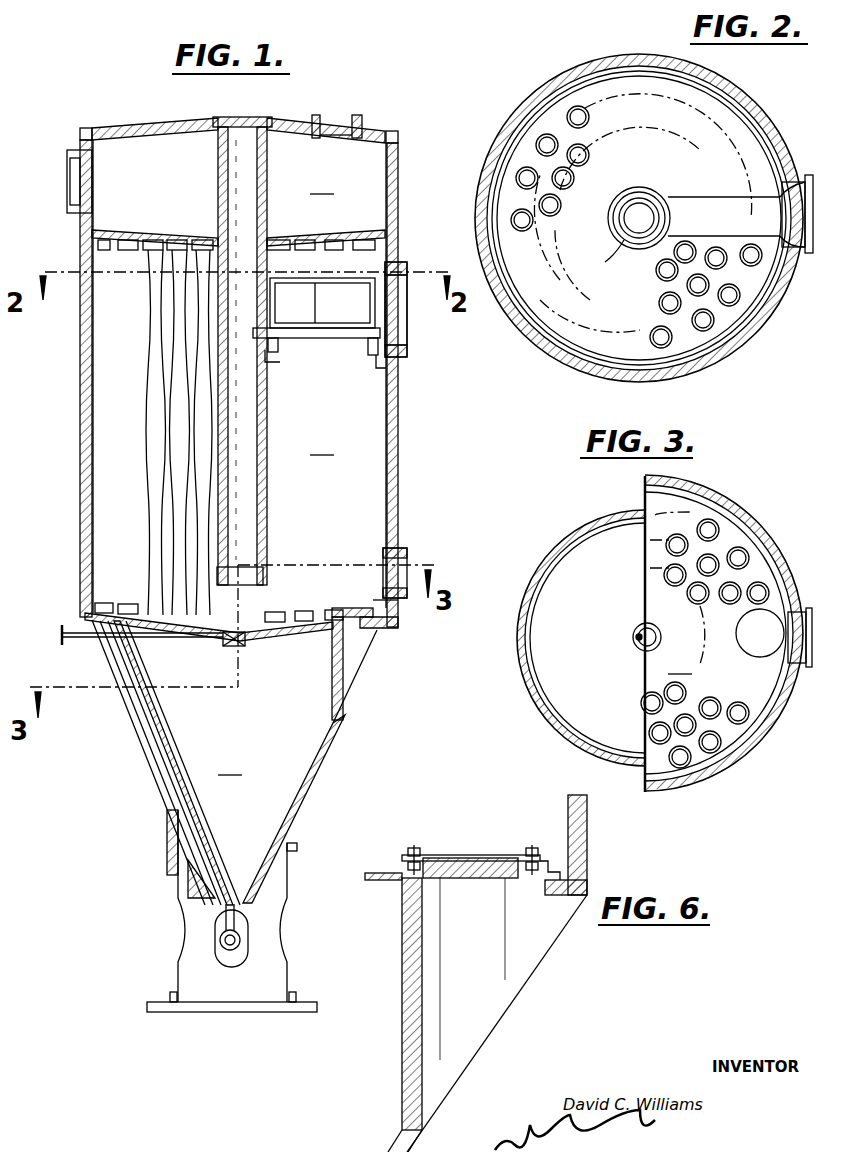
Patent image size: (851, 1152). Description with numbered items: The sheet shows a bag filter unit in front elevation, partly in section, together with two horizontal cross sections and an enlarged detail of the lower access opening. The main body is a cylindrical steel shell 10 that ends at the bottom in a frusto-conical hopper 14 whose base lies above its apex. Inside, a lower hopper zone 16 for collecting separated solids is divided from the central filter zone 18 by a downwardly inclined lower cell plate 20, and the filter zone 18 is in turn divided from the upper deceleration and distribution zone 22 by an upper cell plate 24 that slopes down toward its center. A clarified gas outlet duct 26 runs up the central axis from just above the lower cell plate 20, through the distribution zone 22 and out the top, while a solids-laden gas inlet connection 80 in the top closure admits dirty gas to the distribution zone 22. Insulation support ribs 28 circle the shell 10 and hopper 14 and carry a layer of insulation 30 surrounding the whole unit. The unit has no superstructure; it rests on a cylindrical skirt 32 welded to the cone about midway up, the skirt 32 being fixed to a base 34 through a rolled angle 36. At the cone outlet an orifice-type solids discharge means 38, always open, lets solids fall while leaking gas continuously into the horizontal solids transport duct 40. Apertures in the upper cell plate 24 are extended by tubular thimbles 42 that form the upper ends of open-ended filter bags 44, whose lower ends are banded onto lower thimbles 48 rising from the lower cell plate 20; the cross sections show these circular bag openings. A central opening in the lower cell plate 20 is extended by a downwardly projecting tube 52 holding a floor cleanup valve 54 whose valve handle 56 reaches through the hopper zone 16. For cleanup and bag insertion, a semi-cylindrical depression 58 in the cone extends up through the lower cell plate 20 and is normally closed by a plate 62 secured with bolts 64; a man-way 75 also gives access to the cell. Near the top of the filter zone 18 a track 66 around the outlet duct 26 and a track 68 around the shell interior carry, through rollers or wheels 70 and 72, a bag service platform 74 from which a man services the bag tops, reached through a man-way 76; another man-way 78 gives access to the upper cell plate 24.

In FIG. 1, the cylindrical steel shell 10 is at (92, 385).
In FIG. 2, the cylindrical steel shell 10 is at (636, 68).
In FIG. 3, the cylindrical steel shell 10 is at (700, 497).
In FIG. 6, the cylindrical steel shell 10 is at (568, 822).
In FIG. 1, the hopper 14 is at (158, 738).
In FIG. 3, the hopper 14 is at (533, 664).
In FIG. 6, the hopper 14 is at (392, 1140).
In FIG. 1, the lower hopper zone 16 is at (230, 764).
In FIG. 1, the central filter zone 18 is at (322, 444).
In FIG. 1, the lower cell plate 20 is at (320, 630).
In FIG. 3, the lower cell plate 20 is at (680, 663).
In FIG. 6, the lower cell plate 20 is at (390, 881).
In FIG. 1, the upper deceleration and distribution zone 22 is at (322, 183).
In FIG. 1, the upper cell plate 24 is at (150, 232).
In FIG. 1, the clarified gas outlet duct 26 is at (260, 428).
In FIG. 2, the clarified gas outlet duct 26 is at (632, 195).
In FIG. 3, the clarified gas outlet duct 26 is at (660, 645).
In FIG. 1, the insulation support ribs 28 is at (398, 256).
In FIG. 1, the layer of insulation 30 is at (80, 420).
In FIG. 2, the layer of insulation 30 is at (548, 92).
In FIG. 3, the layer of insulation 30 is at (592, 525).
In FIG. 6, the layer of insulation 30 is at (578, 845).
In FIG. 1, the cylindrical skirt 32 is at (289, 872).
In FIG. 1, the base 34 is at (300, 1006).
In FIG. 1, the rolled angle 36 is at (294, 994).
In FIG. 1, the orifice-type solids discharge means 38 is at (238, 928).
In FIG. 3, the orifice-type solids discharge means 38 is at (637, 640).
In FIG. 1, the solids transport duct 40 is at (236, 950).
In FIG. 1, the thimbles 42 is at (134, 252).
In FIG. 1, the filter bags 44 is at (160, 440).
In FIG. 1, the lower thimbles 48 is at (136, 612).
In FIG. 2, the lower thimbles 48 is at (588, 122).
In FIG. 3, the lower thimbles 48 is at (700, 600).
In FIG. 1, the downwardly projecting tube 52 is at (246, 640).
In FIG. 1, the floor cleanup valve 54 is at (205, 663).
In FIG. 1, the valve handle 56 is at (85, 636).
In FIG. 1, the semi-cylindrical depression 58 is at (343, 667).
In FIG. 6, the semi-cylindrical depression 58 is at (405, 995).
In FIG. 1, the plate 62 is at (368, 608).
In FIG. 3, the plate 62 is at (760, 645).
In FIG. 6, the plate 62 is at (478, 858).
In FIG. 6, the bolts 64 is at (416, 848).
In FIG. 1, the track 66 is at (272, 362).
In FIG. 2, the track 66 is at (625, 250).
In FIG. 1, the track 68 is at (378, 370).
In FIG. 2, the track 68 is at (590, 358).
In FIG. 1, the rollers or wheels 70 is at (280, 345).
In FIG. 1, the rollers or wheels 72 is at (370, 352).
In FIG. 1, the bag service platform 74 is at (362, 328).
In FIG. 2, the bag service platform 74 is at (732, 214).
In FIG. 1, the man-way 75 is at (405, 560).
In FIG. 3, the man-way 75 is at (808, 614).
In FIG. 1, the man-way 76 is at (398, 280).
In FIG. 2, the man-way 76 is at (795, 186).
In FIG. 1, the man-way 78 is at (70, 172).
In FIG. 1, the solids-laden gas inlet connection 80 is at (322, 128).